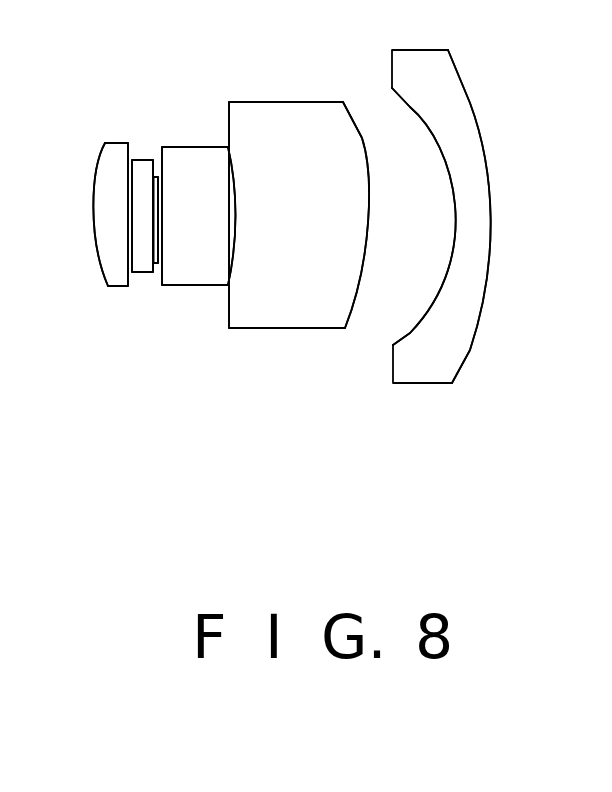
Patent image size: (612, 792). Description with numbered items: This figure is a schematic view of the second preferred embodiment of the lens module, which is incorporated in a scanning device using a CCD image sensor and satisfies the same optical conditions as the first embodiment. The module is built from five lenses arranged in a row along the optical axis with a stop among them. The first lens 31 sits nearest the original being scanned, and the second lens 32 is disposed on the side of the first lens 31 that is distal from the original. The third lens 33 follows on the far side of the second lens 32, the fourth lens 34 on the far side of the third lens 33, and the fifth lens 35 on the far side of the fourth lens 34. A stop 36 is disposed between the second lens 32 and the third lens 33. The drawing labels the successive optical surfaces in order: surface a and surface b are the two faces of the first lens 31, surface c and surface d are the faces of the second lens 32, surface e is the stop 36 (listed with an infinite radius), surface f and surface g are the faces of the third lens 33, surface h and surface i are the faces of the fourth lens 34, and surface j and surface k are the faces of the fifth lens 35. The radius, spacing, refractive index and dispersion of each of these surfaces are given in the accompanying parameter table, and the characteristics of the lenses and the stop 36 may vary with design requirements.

The first lens 31 is at (110, 287).
The second lens 32 is at (143, 272).
The third lens 33 is at (200, 285).
The fourth lens 34 is at (292, 328).
The fifth lens 35 is at (412, 384).
The stop 36 is at (153, 276).
The surface a is at (92, 215).
The surface b is at (127, 143).
The surface c is at (133, 183).
The surface d is at (155, 177).
The surface e is at (170, 292).
The surface f is at (162, 152).
The surface g is at (230, 185).
The surface h is at (228, 150).
The surface i is at (368, 150).
The surface j is at (455, 197).
The surface k is at (493, 210).